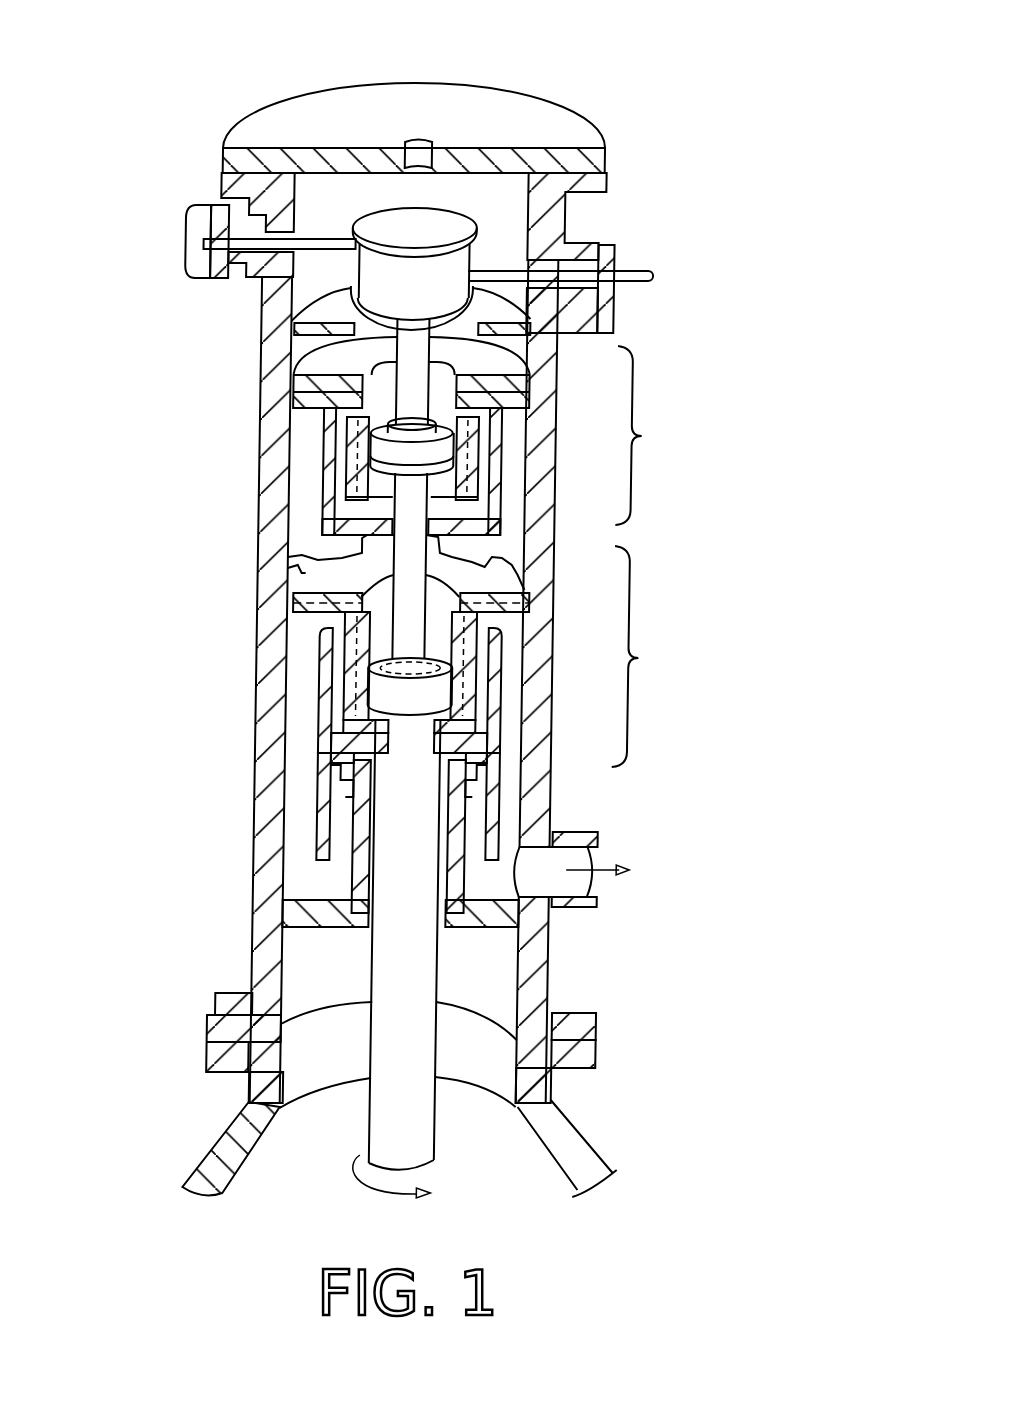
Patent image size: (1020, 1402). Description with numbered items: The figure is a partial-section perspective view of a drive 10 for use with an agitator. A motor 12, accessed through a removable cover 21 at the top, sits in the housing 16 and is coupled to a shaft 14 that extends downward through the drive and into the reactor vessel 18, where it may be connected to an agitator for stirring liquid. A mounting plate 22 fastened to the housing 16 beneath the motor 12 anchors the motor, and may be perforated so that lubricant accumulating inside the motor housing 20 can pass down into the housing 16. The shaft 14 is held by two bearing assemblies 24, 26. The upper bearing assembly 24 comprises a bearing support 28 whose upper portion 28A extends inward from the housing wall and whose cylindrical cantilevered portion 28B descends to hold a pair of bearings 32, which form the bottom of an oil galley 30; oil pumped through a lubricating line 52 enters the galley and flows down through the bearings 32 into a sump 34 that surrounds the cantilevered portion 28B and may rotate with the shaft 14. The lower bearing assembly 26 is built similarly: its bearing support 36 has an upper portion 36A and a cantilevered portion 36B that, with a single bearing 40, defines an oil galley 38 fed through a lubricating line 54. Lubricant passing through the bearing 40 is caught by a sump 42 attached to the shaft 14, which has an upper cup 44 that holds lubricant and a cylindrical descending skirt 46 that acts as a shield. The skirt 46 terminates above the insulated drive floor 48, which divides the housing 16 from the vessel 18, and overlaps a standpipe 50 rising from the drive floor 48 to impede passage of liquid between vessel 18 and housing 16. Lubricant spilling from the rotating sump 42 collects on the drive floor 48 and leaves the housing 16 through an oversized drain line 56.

The drive 10 is at (722, 518).
The motor 12 is at (373, 233).
The shaft 14 is at (409, 1063).
The housing 16 is at (266, 927).
The reactor vessel 18 is at (240, 1160).
The motor housing 20 is at (568, 224).
The removable cover 21 is at (375, 113).
The mounting plate 22 is at (325, 321).
The bearing assembly 24 is at (649, 435).
The second bearing assembly 26 is at (647, 656).
The bearing support 28 is at (320, 350).
The upper portion 28A is at (306, 399).
The cantilevered portion 28B is at (350, 488).
The oil galley 30 is at (373, 404).
The bearings 32 is at (458, 441).
The sump 34 is at (353, 449).
The bearing support 36 is at (306, 584).
The upper portion 36A is at (307, 609).
The cantilevered portion 36B is at (388, 708).
The oil galley 38 is at (360, 558).
The bearing 40 is at (461, 698).
The sump 42 is at (309, 742).
The upper cup 44 is at (345, 647).
The descending skirt 46 is at (335, 841).
The drive floor 48 is at (326, 891).
The standpipe 50 is at (365, 826).
The lubricating line 52 is at (568, 389).
The lubricating line 54 is at (569, 600).
The drain line 56 is at (593, 907).